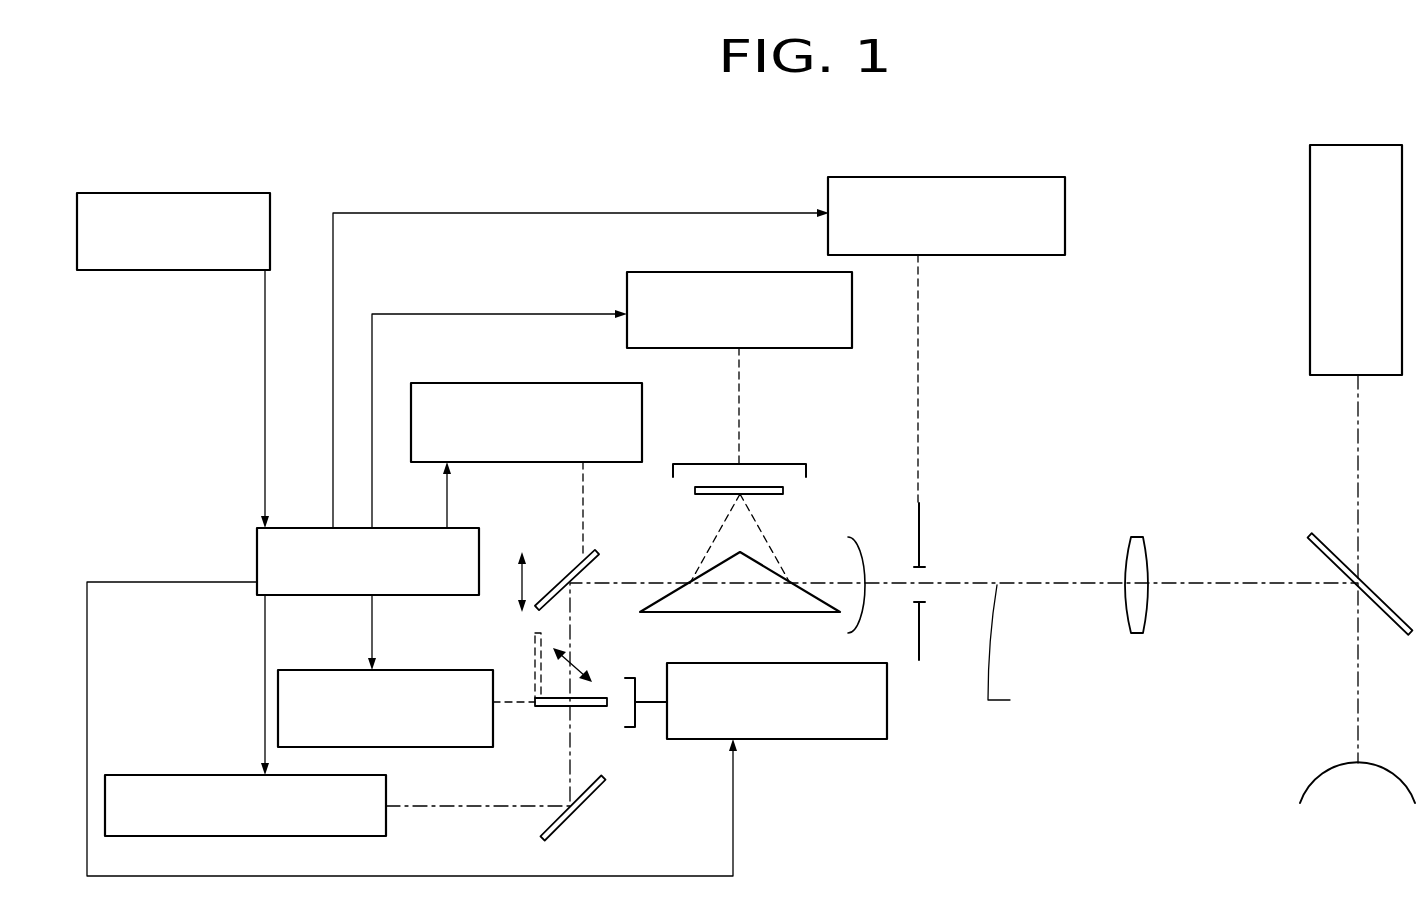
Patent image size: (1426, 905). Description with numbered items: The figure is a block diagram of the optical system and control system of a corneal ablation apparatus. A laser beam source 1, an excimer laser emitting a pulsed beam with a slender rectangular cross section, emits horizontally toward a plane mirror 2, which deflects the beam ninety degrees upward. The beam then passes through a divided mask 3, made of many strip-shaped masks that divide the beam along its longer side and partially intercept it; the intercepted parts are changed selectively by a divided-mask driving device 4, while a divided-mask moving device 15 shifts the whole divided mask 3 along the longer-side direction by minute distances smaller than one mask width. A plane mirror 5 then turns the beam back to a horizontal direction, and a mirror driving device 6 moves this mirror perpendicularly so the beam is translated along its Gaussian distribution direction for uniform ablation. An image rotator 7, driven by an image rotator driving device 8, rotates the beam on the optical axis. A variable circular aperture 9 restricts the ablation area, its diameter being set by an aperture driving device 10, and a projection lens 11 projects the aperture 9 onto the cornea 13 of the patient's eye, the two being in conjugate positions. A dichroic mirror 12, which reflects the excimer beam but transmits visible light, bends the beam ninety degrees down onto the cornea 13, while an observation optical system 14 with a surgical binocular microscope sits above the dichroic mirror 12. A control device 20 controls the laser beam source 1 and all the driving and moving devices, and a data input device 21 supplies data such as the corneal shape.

The laser beam source 1 is at (175, 775).
The plane mirror 2 is at (590, 800).
The divided mask 3 is at (548, 707).
The divided-mask driving device 4 is at (427, 669).
The plane mirror 5 is at (565, 580).
The mirror driving device 6 is at (492, 383).
The image rotator 7 is at (822, 522).
The image rotator driving device 8 is at (627, 278).
The variable circular aperture 9 is at (919, 542).
The aperture driving device 10 is at (982, 257).
The projection lens 11 is at (1133, 605).
The dichroic mirror 12 is at (1317, 551).
The cornea 13 is at (1340, 765).
The observation optical system 14 is at (1323, 377).
The divided-mask moving device 15 is at (833, 739).
The control device 20 is at (257, 550).
The data input device 21 is at (152, 270).